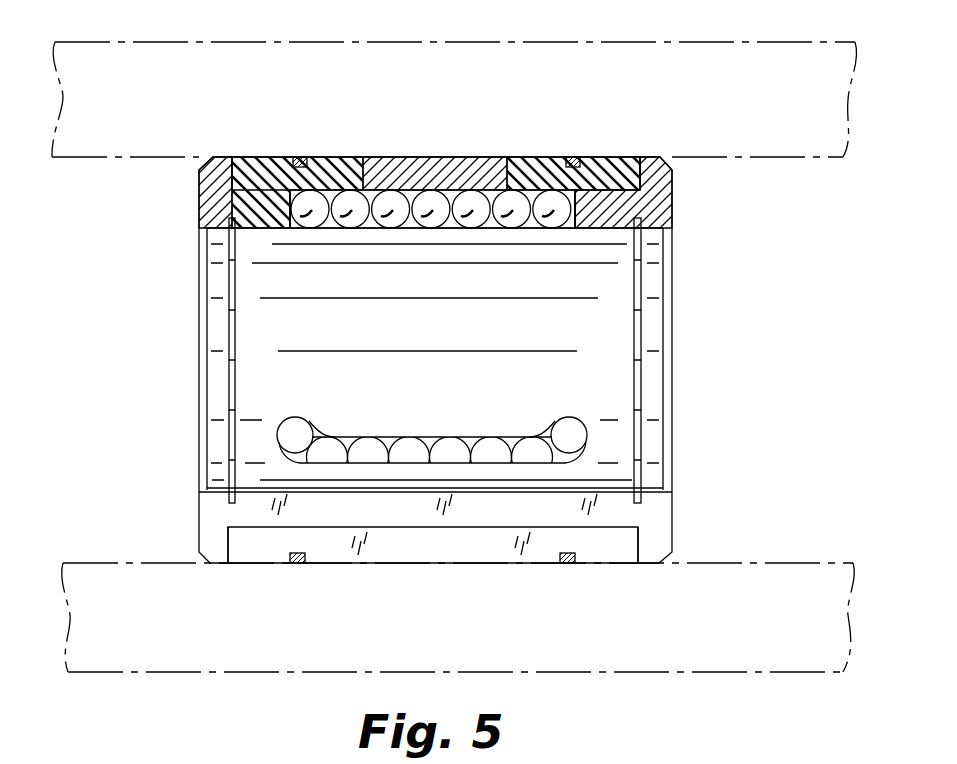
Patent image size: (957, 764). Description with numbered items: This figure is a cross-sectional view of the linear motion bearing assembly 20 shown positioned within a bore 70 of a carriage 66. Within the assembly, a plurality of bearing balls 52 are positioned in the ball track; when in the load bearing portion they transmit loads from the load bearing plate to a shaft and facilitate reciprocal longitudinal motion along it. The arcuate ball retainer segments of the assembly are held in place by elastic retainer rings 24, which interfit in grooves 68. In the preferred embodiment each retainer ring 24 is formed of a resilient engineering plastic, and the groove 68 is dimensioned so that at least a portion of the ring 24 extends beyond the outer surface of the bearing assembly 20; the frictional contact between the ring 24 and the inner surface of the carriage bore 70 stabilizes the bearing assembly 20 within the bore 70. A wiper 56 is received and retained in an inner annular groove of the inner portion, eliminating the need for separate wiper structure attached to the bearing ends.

The linear motion bearing assembly 20 is at (698, 295).
The elastic retainer ring 24 is at (302, 158).
The bearing balls 52 is at (458, 205).
The wiper 56 is at (229, 380).
The carriage 66 is at (562, 45).
The groove 68 is at (288, 178).
The bore 70 is at (790, 158).